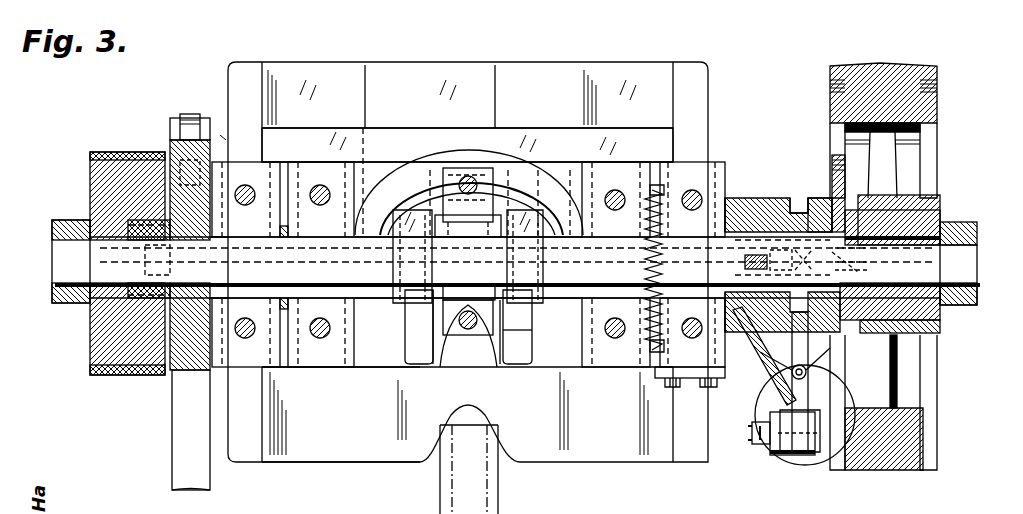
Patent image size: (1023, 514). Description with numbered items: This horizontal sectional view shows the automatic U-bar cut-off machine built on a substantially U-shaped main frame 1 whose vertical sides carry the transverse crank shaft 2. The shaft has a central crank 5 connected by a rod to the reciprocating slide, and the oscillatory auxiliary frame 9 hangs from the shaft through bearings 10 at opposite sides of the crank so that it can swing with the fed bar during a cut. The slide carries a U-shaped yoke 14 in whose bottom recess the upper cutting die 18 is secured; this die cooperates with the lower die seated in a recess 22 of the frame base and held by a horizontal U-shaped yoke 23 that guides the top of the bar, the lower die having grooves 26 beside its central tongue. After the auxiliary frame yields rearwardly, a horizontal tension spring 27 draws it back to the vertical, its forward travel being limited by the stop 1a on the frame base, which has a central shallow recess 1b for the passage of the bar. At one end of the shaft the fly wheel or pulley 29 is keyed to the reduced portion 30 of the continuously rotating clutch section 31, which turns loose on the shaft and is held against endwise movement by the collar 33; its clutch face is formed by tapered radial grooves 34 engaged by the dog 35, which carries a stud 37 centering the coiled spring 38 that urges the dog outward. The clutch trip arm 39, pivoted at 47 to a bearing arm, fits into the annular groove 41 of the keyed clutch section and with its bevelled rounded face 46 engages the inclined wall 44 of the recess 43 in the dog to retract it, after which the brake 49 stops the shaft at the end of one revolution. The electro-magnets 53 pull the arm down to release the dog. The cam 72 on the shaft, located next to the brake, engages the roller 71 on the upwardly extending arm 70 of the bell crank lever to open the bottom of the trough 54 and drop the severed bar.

The main frame 1 is at (255, 442).
The stop 1a is at (390, 148).
The central shallow recess 1b is at (462, 140).
The crank shaft 2 is at (95, 265).
The crank 5 is at (483, 243).
The auxiliary frame 9 is at (370, 337).
The bearings 10 is at (300, 213).
The yoke 14 is at (412, 318).
The upper cutting die 18 is at (442, 366).
The recess 22 is at (500, 366).
The yoke 23 is at (522, 348).
The grooves 26 is at (652, 368).
The coiled spring 27 is at (648, 190).
The fly wheel or pulley 29 is at (915, 92).
The reduced portion 30 is at (940, 196).
The rotating clutch section 31 is at (838, 196).
The collar 33 is at (972, 222).
The grooves 34 is at (824, 196).
The dog 35 is at (874, 258).
The stud 37 is at (752, 258).
The coiled spring 38 is at (757, 198).
The clutch trip arm 39 is at (800, 398).
The annular groove 41 is at (798, 195).
The recess 43 is at (838, 256).
The inclined rounded wall 44 is at (774, 198).
The bevelled and rounded side face 46 is at (852, 270).
The pivot 47 is at (795, 458).
The brake 49 is at (146, 376).
The electro-magnets 53 is at (812, 462).
The trough 54 is at (492, 493).
The arm 70 is at (176, 122).
The roller 71 is at (190, 116).
The cam 72 is at (176, 148).